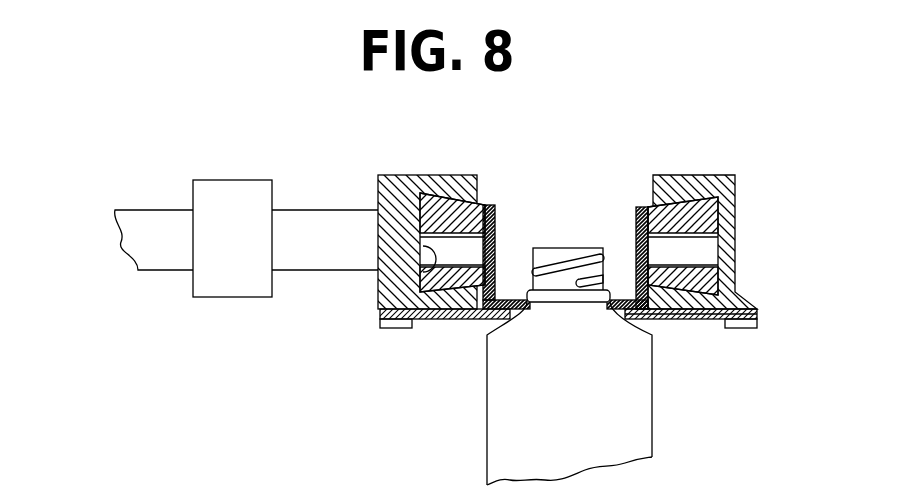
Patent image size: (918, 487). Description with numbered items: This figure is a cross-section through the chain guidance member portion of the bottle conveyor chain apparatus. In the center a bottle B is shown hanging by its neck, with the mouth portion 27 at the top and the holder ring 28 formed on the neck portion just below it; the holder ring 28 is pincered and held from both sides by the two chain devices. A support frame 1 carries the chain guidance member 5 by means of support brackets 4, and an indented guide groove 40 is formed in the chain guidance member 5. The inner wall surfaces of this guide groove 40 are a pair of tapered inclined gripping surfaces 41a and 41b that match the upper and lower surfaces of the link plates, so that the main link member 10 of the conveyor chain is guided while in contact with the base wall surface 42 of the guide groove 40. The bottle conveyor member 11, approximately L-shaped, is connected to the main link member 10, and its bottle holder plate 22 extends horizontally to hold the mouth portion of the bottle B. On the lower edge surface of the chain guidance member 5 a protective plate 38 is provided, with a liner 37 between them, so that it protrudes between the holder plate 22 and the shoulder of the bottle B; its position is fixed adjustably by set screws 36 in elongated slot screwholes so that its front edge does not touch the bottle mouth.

The support frame 1 is at (230, 297).
The support bracket 4 is at (160, 262).
The chain guidance member 5 is at (405, 175).
The main link member 10 is at (695, 192).
The bottle conveyor member 11 is at (633, 208).
The bottle holder plate 22 is at (498, 300).
The mouth portion 27 is at (567, 247).
The holder ring 28 is at (612, 290).
The set screw 36 is at (743, 330).
The plate layer 37 is at (692, 322).
The protective plate 38 is at (490, 322).
The guide groove 40 is at (702, 277).
The gripping surface 41a is at (443, 192).
The gripping surface 41b is at (445, 300).
The base wall surface 42 is at (425, 325).
The bottle B is at (652, 412).